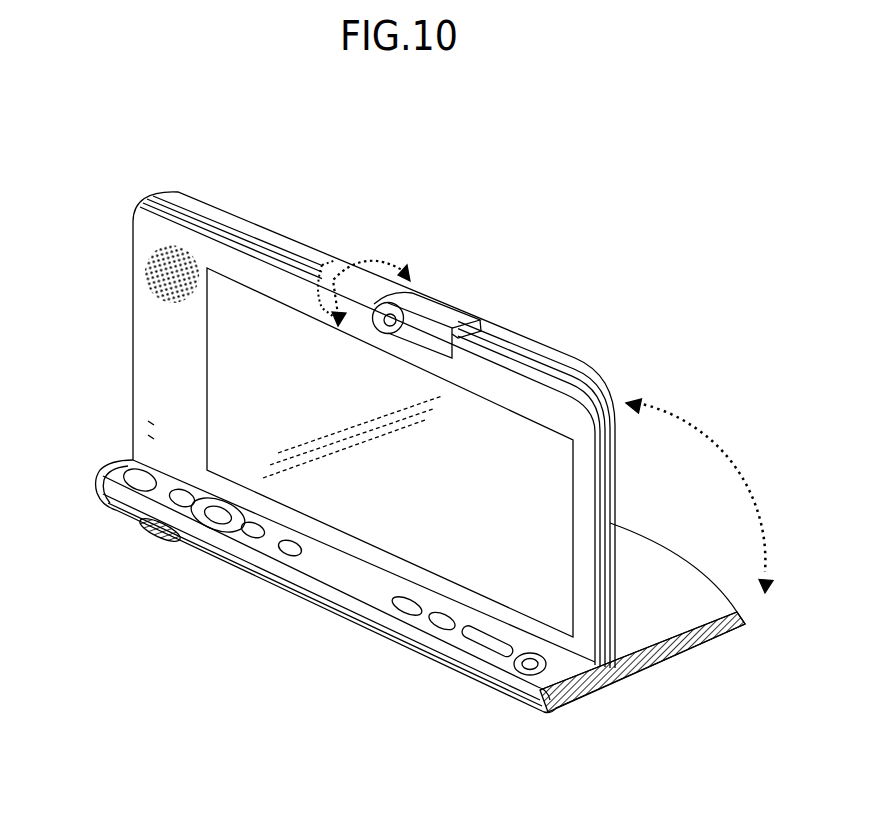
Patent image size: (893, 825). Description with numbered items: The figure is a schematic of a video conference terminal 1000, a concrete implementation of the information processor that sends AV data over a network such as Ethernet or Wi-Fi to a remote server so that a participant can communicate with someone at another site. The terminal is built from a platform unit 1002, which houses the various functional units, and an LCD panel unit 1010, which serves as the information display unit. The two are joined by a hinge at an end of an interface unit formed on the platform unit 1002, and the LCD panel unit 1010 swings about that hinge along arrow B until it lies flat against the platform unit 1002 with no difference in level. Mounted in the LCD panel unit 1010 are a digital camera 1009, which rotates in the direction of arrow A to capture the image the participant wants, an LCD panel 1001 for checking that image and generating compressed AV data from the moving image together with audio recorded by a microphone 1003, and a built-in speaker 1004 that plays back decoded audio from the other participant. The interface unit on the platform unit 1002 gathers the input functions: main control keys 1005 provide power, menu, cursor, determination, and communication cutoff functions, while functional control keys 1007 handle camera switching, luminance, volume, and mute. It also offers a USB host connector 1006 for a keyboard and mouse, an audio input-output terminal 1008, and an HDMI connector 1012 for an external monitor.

The video conference terminal 1000 is at (791, 178).
The LCD panel 1001 is at (280, 328).
The platform unit 1002 is at (663, 550).
The microphone 1003 is at (517, 392).
The built-in speaker 1004 is at (158, 270).
The main control keys 1005 is at (175, 540).
The USB host connector 1006 is at (188, 540).
The functional control keys 1007 is at (457, 650).
The audio input-output terminal 1008 is at (490, 680).
The digital camera 1009 is at (388, 302).
The LCD panel unit 1010 is at (302, 247).
The HDMI connector 1012 is at (683, 648).